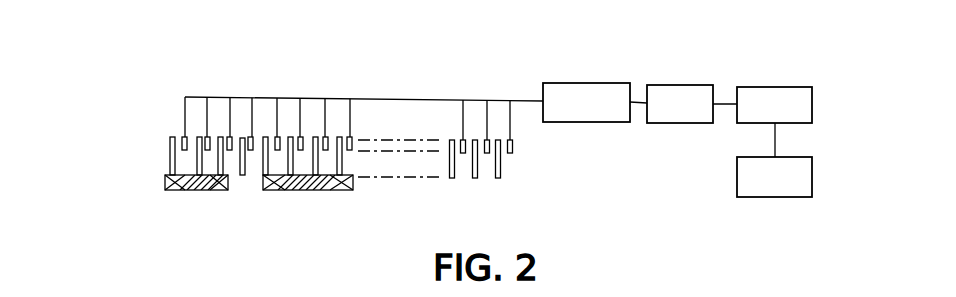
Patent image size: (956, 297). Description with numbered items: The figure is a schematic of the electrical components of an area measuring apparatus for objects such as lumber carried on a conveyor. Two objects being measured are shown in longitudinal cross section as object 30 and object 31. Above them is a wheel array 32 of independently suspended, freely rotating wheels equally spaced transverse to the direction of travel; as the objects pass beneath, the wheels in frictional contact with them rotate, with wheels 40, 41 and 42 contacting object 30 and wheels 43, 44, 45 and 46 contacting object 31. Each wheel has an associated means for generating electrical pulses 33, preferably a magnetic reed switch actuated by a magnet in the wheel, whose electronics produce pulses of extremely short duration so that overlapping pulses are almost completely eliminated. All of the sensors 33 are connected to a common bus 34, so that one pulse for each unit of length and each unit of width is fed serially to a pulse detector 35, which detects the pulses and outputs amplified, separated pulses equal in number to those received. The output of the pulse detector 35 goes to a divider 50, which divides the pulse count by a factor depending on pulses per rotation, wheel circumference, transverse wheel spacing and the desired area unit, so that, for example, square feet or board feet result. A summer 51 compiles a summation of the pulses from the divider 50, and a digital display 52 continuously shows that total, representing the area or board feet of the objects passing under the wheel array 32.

The object being measured 30 is at (183, 190).
The object being measured 31 is at (296, 191).
The wheel array 32 is at (158, 145).
The means for generating electrical pulses 33 is at (205, 135).
The common bus 34 is at (375, 100).
The pulse detector 35 is at (562, 83).
The wheel 40 is at (197, 161).
The wheel 41 is at (193, 163).
The wheel 42 is at (224, 191).
The wheel 43 is at (262, 162).
The wheel 44 is at (287, 163).
The wheel 45 is at (322, 191).
The wheel 46 is at (350, 191).
The divider 50 is at (675, 85).
The summer 51 is at (763, 87).
The digital display 52 is at (758, 197).